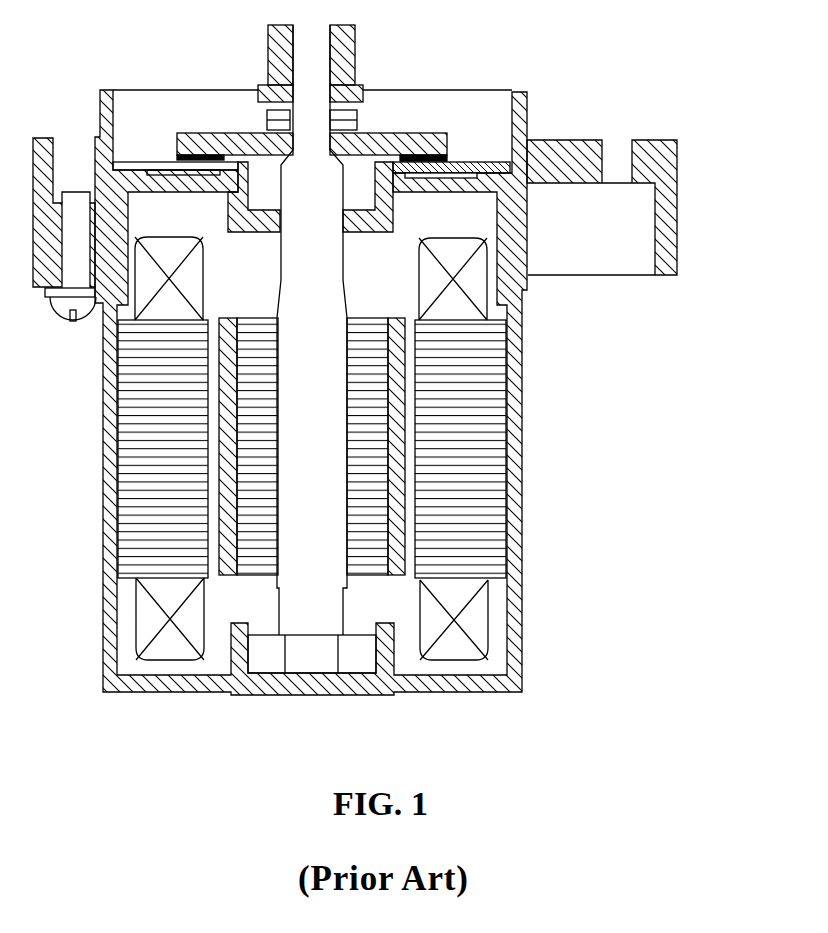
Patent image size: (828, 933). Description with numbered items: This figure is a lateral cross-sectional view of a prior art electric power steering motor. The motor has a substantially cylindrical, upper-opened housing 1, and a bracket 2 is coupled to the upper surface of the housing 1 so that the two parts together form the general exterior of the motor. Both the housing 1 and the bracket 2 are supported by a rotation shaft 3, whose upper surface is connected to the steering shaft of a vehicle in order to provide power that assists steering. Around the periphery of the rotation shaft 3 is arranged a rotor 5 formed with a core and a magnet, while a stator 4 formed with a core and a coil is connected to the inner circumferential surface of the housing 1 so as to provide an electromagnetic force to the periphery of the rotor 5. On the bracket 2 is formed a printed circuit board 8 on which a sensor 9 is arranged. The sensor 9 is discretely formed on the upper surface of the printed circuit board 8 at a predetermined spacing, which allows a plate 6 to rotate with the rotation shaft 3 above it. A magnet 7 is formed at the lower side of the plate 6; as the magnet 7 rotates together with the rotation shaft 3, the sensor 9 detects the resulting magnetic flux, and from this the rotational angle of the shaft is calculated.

The housing 1 is at (515, 452).
The bracket 2 is at (667, 225).
The rotation shaft 3 is at (308, 600).
The stator 4 is at (148, 482).
The rotor 5 is at (253, 568).
The plate 6 is at (233, 150).
The magnet 7 is at (207, 157).
The printed circuit board 8 is at (473, 167).
The sensor 9 is at (421, 157).